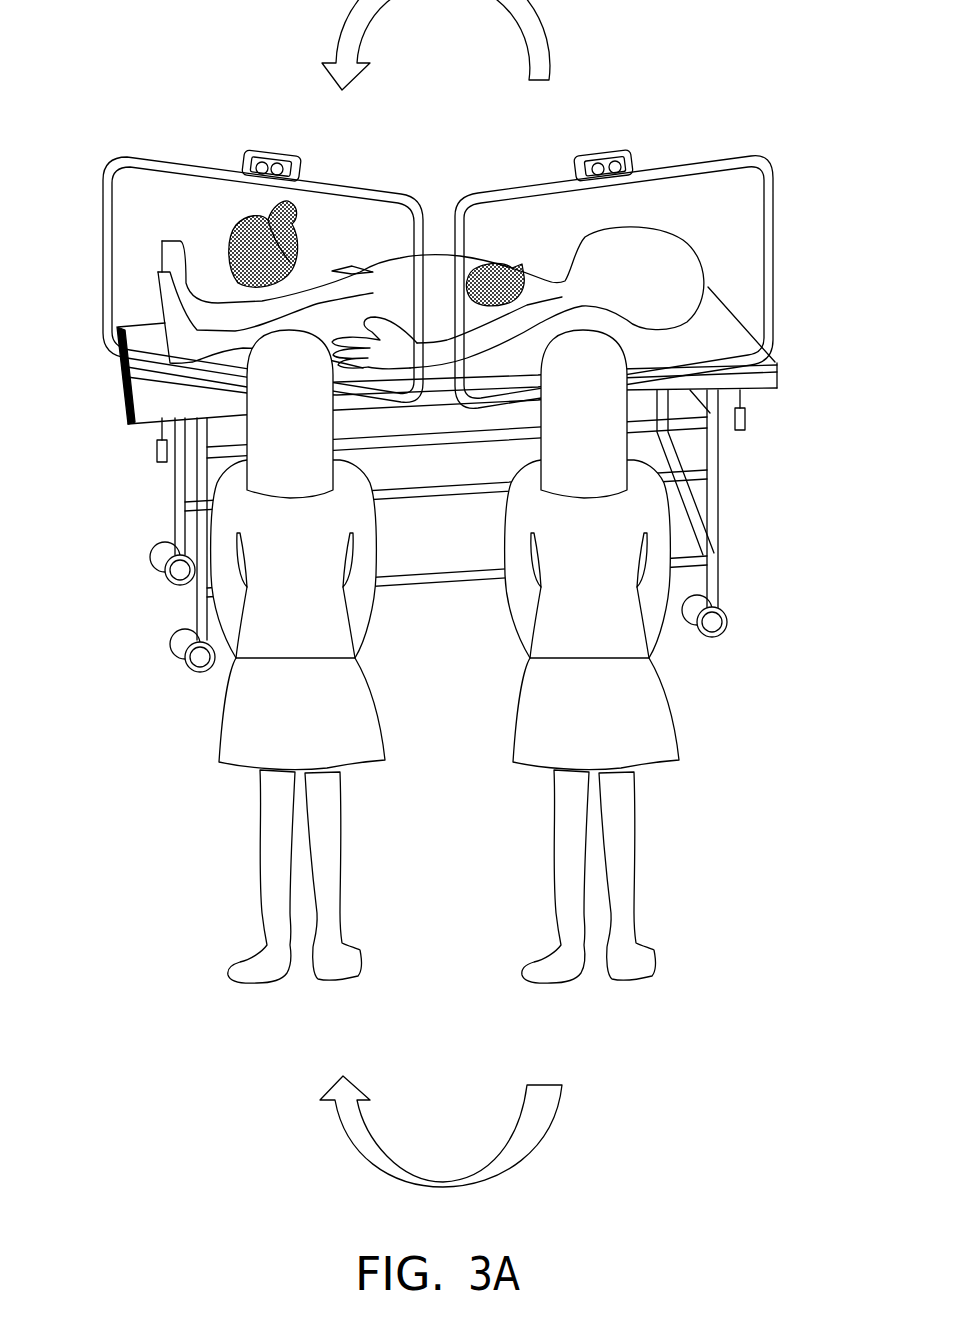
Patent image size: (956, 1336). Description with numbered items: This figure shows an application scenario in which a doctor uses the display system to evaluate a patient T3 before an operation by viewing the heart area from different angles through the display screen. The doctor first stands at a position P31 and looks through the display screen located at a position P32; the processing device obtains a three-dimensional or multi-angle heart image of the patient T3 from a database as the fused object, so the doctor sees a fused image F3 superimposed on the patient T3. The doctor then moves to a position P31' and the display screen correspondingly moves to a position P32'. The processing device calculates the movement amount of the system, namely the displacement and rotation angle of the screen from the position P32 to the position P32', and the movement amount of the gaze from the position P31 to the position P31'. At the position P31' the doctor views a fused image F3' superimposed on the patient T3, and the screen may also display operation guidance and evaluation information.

The position of display screen P32 is at (613, 268).
The position of display screen P32' is at (262, 268).
The fused image F3 is at (520, 260).
The fused image F3' is at (234, 238).
The patient T3 is at (658, 258).
The position of doctor P31 is at (592, 690).
The position of doctor P31' is at (298, 690).